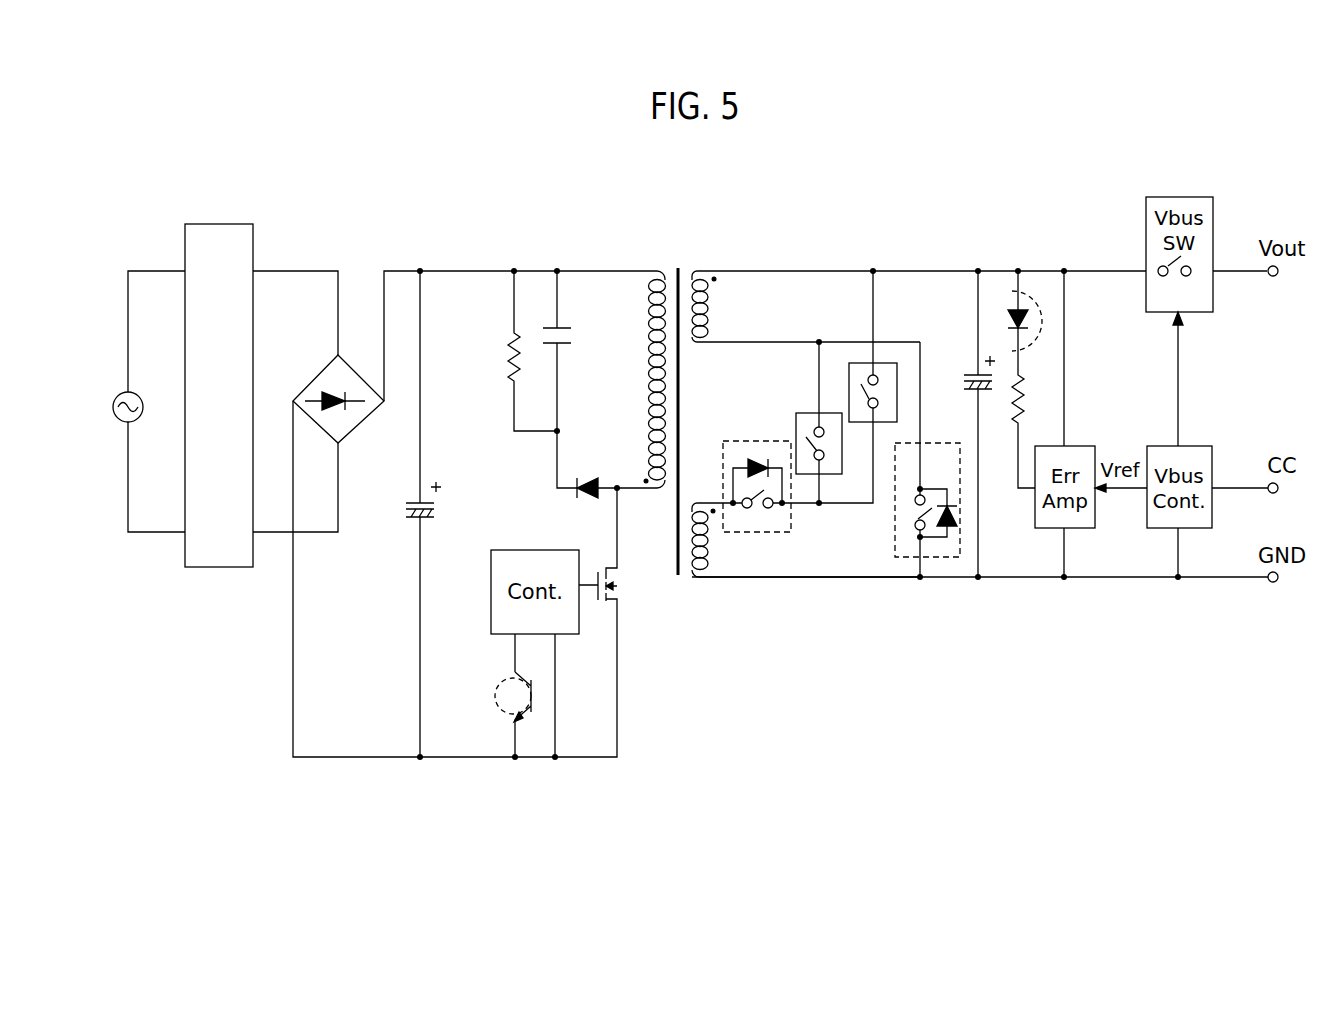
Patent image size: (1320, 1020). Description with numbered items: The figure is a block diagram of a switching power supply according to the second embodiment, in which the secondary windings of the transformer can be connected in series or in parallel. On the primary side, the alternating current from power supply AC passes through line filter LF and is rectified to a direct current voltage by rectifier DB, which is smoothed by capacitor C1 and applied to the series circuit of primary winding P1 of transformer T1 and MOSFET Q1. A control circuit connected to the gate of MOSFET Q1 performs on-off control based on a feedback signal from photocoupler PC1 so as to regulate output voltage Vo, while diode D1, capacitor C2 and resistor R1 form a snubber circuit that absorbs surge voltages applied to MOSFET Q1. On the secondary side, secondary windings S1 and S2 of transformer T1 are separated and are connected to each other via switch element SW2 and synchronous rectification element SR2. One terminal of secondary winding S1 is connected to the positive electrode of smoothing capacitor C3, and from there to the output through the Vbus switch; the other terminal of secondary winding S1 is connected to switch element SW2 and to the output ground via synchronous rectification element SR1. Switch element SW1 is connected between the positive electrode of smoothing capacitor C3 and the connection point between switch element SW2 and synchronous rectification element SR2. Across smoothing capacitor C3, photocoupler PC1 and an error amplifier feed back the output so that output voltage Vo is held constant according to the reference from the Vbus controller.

The power supply AC is at (137, 395).
The line filter LF is at (219, 395).
The rectifier DB is at (334, 391).
The capacitor C1 is at (408, 514).
The resistor R1 is at (512, 351).
The capacitor C2 is at (572, 351).
The transformer T1 is at (675, 407).
The primary winding P1 is at (639, 384).
The secondary winding S1 is at (806, 306).
The secondary winding S2 is at (806, 540).
The diode D1 is at (587, 464).
The MOSFET Q1 is at (625, 544).
The photocoupler PC1 is at (746, 499).
The switch element SW1 is at (854, 387).
The switch element SW2 is at (806, 422).
The synchronous rectification element SR1 is at (931, 459).
The synchronous rectification element SR2 is at (757, 472).
The smoothing capacitor C3 is at (971, 424).
The output voltage Vo is at (1102, 268).